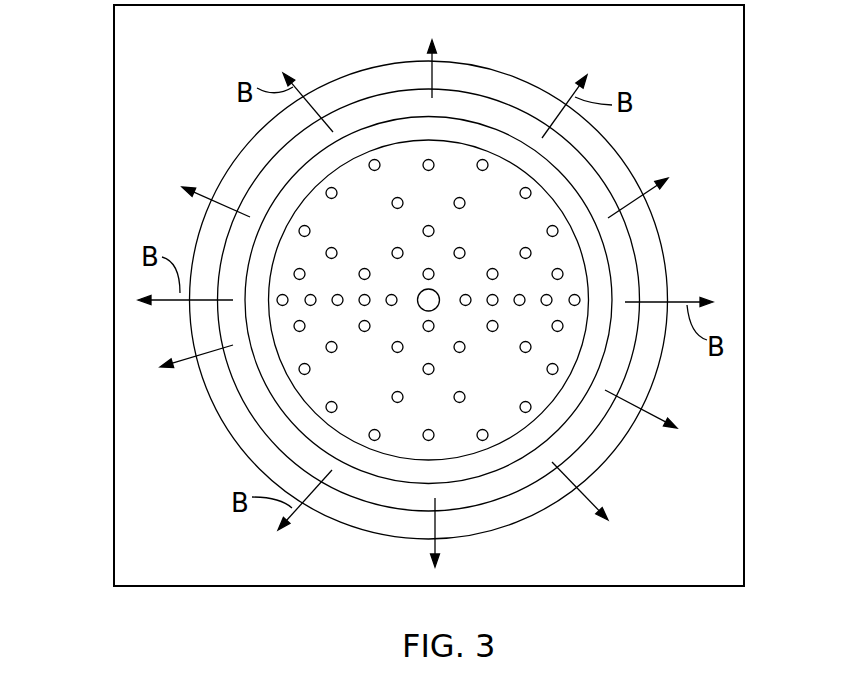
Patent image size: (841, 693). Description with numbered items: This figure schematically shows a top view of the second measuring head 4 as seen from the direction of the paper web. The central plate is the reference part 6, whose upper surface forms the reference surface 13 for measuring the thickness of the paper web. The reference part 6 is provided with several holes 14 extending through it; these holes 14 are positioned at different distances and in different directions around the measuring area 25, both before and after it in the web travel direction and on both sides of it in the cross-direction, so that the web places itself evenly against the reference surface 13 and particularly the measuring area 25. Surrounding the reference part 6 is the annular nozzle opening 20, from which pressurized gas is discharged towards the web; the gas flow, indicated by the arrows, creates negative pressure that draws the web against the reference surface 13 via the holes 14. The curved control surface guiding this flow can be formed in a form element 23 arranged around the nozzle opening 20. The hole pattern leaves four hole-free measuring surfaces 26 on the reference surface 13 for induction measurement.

The second measuring head 4 is at (70, 491).
The reference part 6 is at (313, 210).
The reference surface 13 is at (312, 397).
The holes 14 is at (422, 160).
The nozzle opening 20 is at (502, 487).
The form element 23 is at (600, 445).
The measuring area 25 is at (440, 300).
The measuring surfaces 26 is at (492, 223).